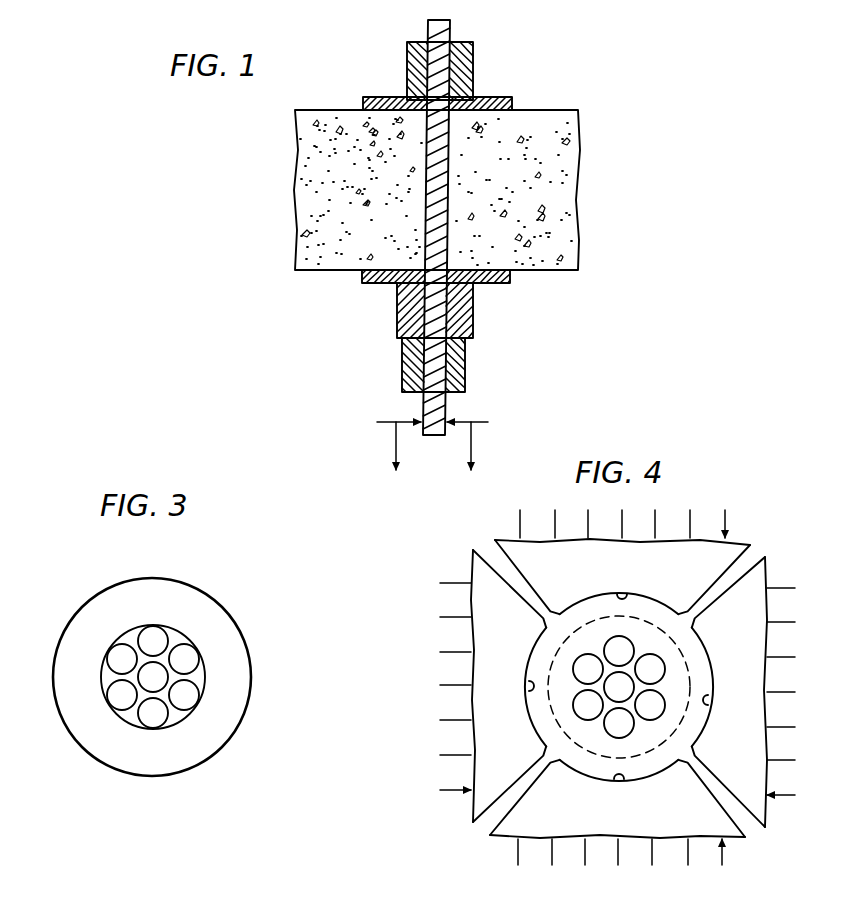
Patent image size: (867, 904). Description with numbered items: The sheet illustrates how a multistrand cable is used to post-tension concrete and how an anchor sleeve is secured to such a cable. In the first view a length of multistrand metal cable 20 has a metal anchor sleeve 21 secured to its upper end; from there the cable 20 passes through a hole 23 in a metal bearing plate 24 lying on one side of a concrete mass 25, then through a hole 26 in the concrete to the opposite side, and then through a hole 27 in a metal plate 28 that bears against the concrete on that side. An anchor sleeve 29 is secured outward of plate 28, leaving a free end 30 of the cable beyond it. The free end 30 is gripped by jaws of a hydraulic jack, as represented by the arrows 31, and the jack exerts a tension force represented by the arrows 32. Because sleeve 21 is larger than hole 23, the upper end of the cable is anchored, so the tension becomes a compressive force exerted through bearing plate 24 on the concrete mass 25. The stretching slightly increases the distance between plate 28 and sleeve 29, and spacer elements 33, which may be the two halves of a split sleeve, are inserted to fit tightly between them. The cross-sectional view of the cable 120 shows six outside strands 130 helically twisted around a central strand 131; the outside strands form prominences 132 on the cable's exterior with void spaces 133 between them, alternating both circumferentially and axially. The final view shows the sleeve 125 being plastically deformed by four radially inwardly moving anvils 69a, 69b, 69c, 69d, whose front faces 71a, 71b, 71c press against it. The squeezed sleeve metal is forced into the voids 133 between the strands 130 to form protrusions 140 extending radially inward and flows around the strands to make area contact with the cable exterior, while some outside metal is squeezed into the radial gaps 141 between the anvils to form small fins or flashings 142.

In FIG. 1, the multistrand metal cable 20 is at (432, 30).
In FIG. 1, the metal anchor sleeve 21 is at (407, 62).
In FIG. 1, the hole in bearing plate 23 is at (452, 100).
In FIG. 1, the metal bearing plate 24 is at (507, 100).
In FIG. 1, the concrete mass 25 is at (303, 162).
In FIG. 1, the hole in concrete 26 is at (427, 204).
In FIG. 1, the hole in metal plate 27 is at (459, 271).
In FIG. 1, the metal plate 28 is at (507, 281).
In FIG. 1, the anchor sleeve 29 is at (402, 360).
In FIG. 1, the free end of cable 30 is at (446, 406).
In FIG. 1, the gripping arrows 31 is at (389, 423).
In FIG. 1, the tension force arrows 32 is at (467, 457).
In FIG. 1, the spacer elements 33 is at (397, 312).
In FIG. 3, the cable 120 is at (175, 716).
In FIG. 4, the cable 120 is at (641, 729).
In FIG. 3, the sleeve 125 is at (75, 722).
In FIG. 4, the sleeve 125 is at (547, 726).
In FIG. 3, the outside strands 130 is at (192, 646).
In FIG. 4, the outside strands 130 is at (630, 645).
In FIG. 3, the central strand 131 is at (147, 677).
In FIG. 4, the central strand 131 is at (612, 684).
In FIG. 3, the prominences 132 is at (155, 626).
In FIG. 3, the void spaces 133 is at (132, 637).
In FIG. 4, the void spaces 133 is at (597, 650).
In FIG. 4, the protrusions 140 is at (598, 652).
In FIG. 4, the radial gaps between anvils 141 is at (513, 578).
In FIG. 4, the fins or flashings 142 is at (548, 610).
In FIG. 4, the anvil 69a is at (479, 710).
In FIG. 4, the anvil 69b is at (697, 548).
In FIG. 4, the anvil 69c is at (749, 607).
In FIG. 4, the anvil 69d is at (700, 833).
In FIG. 4, the anvil front face 71a is at (528, 686).
In FIG. 4, the anvil front face 71b is at (624, 593).
In FIG. 4, the anvil front face 71c is at (709, 700).